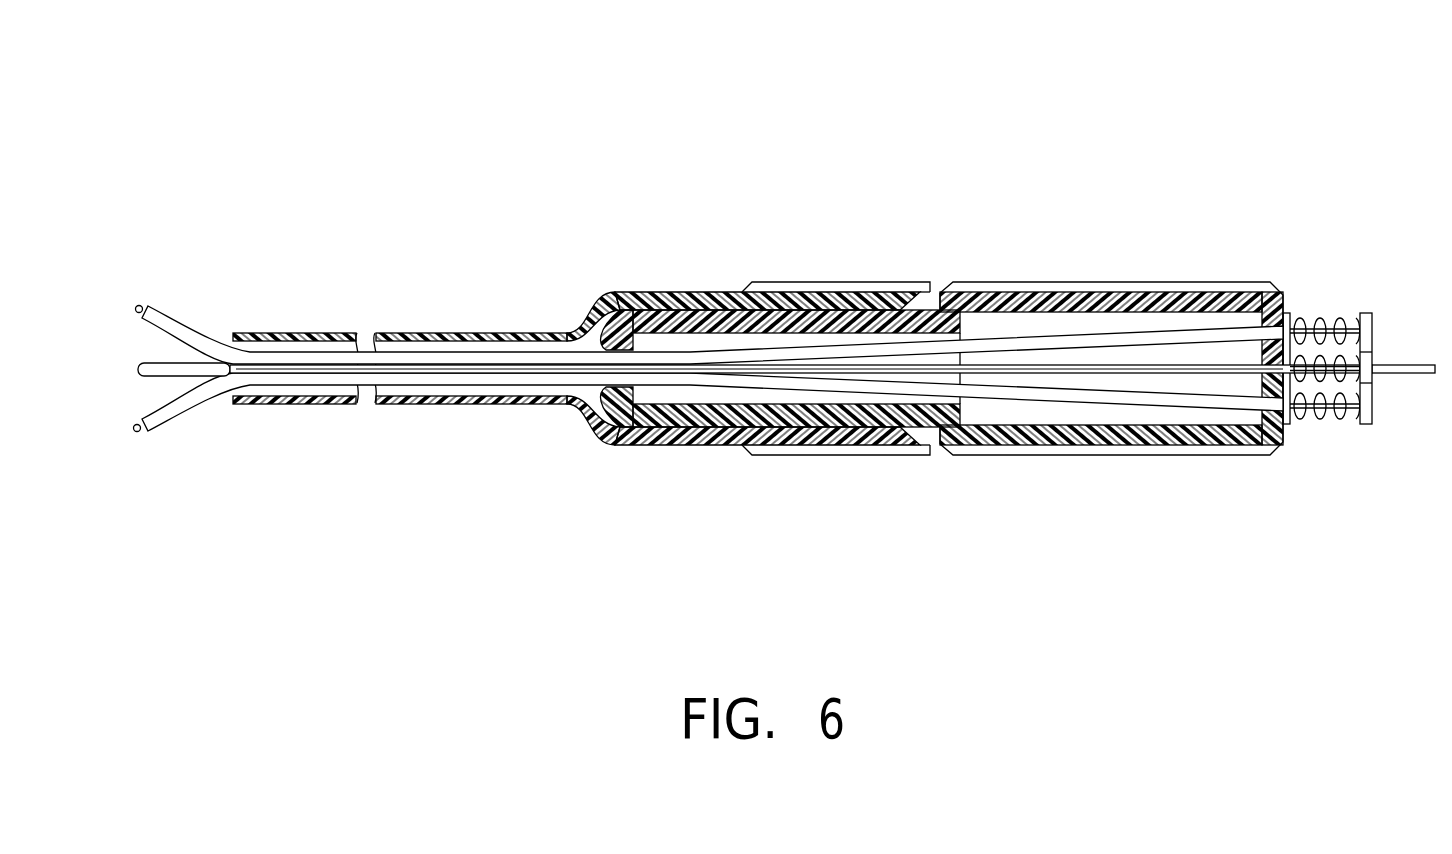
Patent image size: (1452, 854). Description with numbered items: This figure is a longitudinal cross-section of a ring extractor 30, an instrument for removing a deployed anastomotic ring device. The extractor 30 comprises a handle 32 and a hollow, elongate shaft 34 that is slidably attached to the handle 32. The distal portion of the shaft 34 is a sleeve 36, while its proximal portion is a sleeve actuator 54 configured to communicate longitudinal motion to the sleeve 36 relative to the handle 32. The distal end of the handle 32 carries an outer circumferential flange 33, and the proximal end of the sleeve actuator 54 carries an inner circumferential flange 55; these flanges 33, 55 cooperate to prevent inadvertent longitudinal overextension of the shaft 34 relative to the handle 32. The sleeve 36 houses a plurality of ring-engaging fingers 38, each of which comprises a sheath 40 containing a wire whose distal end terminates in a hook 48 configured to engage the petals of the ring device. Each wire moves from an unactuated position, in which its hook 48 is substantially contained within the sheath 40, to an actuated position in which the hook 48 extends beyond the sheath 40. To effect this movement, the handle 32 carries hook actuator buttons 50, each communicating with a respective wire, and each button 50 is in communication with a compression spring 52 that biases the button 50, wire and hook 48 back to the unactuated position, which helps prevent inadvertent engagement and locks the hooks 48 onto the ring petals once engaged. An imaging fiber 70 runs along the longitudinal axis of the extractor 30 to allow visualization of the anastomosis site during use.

The ring extractor 30 is at (543, 93).
The handle 32 is at (1097, 215).
The outer circumferential flange 33 is at (677, 422).
The hollow, elongate shaft 34 is at (533, 503).
The sleeve 36 is at (284, 332).
The ring-engaging finger 38 is at (203, 407).
The sheath 40 is at (204, 352).
The hook 48 is at (134, 368).
The hook actuator button 50 is at (1373, 343).
The compression spring 52 is at (1328, 316).
The sleeve actuator 54 is at (660, 291).
The inner circumferential flange 55 is at (880, 311).
The imaging fiber 70 is at (1405, 375).